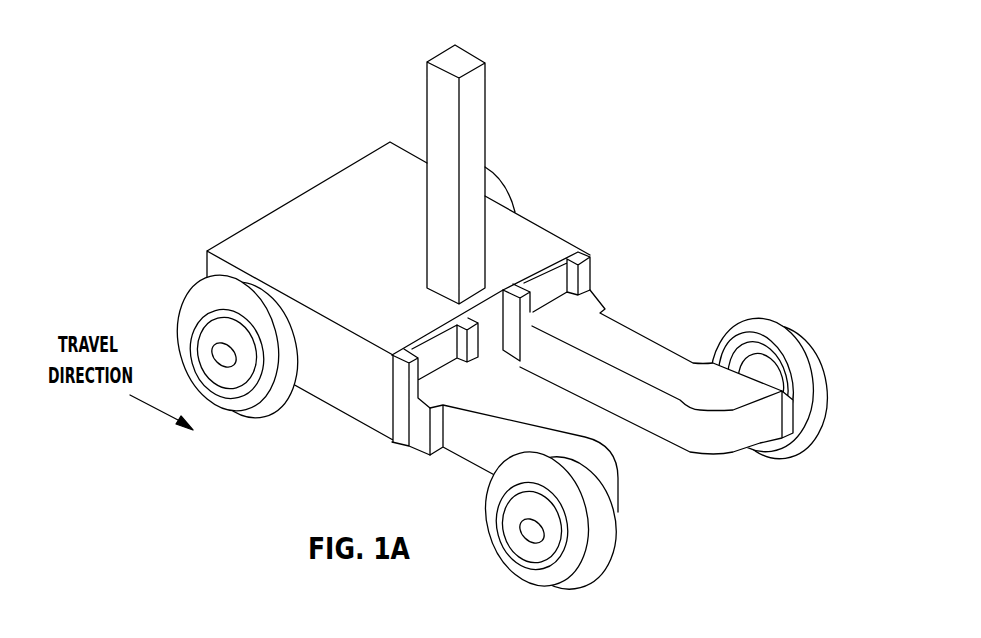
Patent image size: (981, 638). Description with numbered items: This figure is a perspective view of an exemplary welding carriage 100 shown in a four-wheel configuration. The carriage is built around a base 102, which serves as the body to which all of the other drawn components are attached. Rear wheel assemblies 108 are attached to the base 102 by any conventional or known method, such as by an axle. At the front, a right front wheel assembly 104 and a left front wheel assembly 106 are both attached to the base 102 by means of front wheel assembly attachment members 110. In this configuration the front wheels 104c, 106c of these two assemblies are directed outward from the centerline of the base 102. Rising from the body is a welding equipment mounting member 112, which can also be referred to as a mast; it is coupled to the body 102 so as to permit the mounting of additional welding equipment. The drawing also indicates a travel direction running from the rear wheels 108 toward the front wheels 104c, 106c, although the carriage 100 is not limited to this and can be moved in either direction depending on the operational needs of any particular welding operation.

The welding carriage 100 is at (514, 329).
The base 102 is at (303, 192).
The right front wheel assembly 104 is at (619, 518).
The front wheel 104c is at (541, 578).
The left front wheel assembly 106 is at (737, 450).
The front wheel 106c is at (810, 376).
The rear wheel assemblies 108 is at (235, 414).
The front wheel assembly attachment members 110 is at (592, 278).
The welding equipment mounting member 112 is at (470, 54).